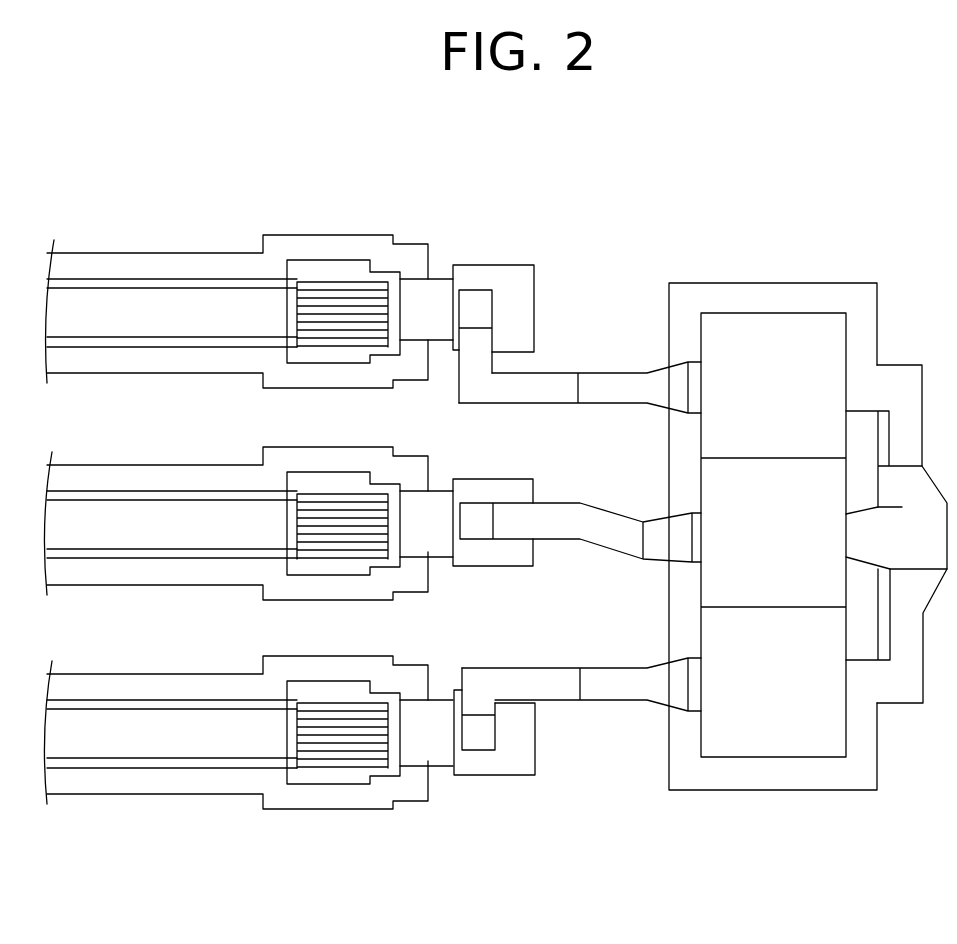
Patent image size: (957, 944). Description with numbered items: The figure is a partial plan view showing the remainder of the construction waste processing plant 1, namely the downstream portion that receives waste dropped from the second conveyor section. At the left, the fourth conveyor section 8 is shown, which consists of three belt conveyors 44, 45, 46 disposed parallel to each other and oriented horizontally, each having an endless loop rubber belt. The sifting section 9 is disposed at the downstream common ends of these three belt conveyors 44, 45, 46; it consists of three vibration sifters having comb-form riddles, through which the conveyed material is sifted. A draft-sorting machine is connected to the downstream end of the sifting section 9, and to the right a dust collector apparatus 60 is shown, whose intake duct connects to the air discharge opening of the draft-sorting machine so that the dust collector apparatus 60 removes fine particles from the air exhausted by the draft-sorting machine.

The construction waste processing plant 1 is at (272, 815).
The fourth conveyor section 8 is at (88, 173).
The sifting section 9 is at (322, 233).
The belt conveyor 44 is at (92, 307).
The belt conveyor 45 is at (83, 517).
The belt conveyor 46 is at (112, 730).
The dust collector apparatus 60 is at (744, 281).